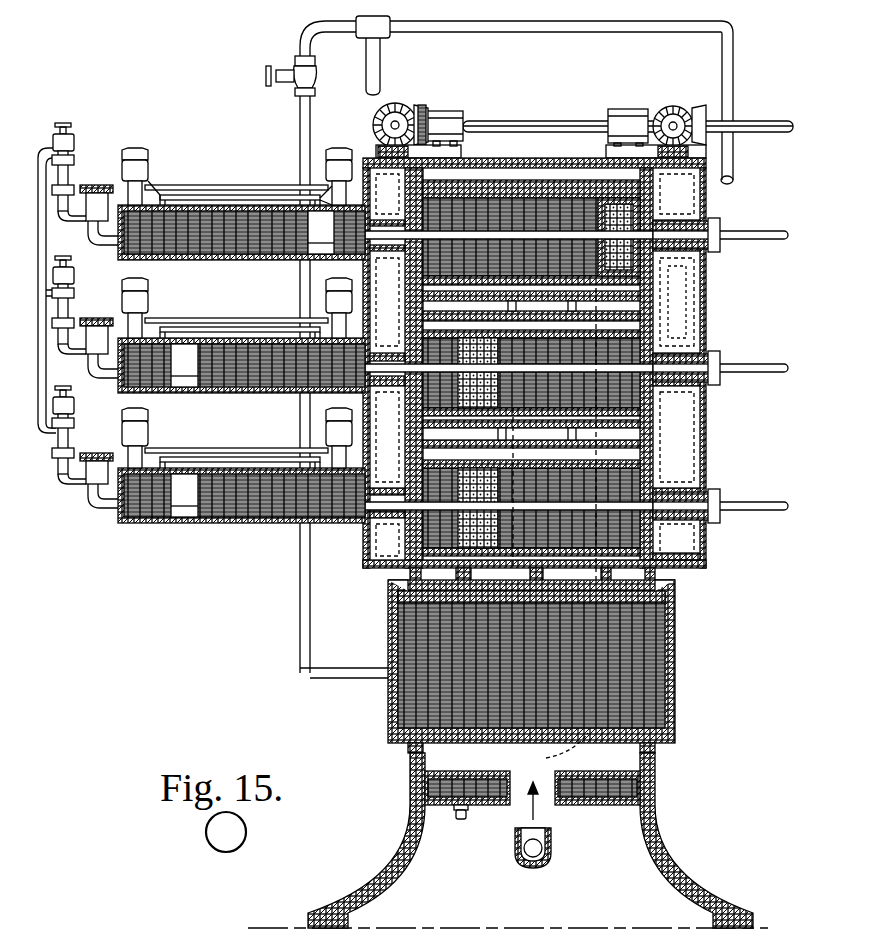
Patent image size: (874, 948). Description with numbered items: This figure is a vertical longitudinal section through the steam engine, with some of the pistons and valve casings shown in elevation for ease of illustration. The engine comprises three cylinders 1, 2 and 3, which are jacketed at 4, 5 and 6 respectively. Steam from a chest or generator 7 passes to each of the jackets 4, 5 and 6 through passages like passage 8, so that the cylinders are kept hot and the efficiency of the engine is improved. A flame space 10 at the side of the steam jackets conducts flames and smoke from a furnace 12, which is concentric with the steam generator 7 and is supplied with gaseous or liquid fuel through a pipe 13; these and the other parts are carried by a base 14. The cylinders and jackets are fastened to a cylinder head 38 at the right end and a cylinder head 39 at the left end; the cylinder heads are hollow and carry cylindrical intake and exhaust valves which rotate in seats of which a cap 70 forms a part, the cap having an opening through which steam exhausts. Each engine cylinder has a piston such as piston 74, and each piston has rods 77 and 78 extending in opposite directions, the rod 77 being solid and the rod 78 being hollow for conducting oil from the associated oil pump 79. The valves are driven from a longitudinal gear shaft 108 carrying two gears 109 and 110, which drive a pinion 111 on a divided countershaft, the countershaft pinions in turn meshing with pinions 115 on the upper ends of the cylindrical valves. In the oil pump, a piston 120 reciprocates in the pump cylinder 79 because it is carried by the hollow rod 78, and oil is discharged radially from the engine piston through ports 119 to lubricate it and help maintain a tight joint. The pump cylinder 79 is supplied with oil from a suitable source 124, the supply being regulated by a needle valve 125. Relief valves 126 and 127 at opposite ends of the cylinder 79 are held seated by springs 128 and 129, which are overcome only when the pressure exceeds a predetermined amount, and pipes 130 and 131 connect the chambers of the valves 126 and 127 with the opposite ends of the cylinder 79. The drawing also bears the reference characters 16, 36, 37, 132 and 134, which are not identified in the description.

The cylinder 1 is at (478, 175).
The cylinder 2 is at (640, 404).
The cylinder 3 is at (672, 528).
The steam jacket 4 is at (512, 175).
The steam jacket 5 is at (640, 418).
The steam jacket 6 is at (672, 549).
The steam chest or generator 7 is at (668, 660).
The passage 8 is at (565, 283).
The flame space 10 is at (445, 277).
The furnace 12 is at (455, 770).
The pipe 13 is at (518, 852).
The base 14 is at (632, 768).
The drain fitting 16 is at (452, 810).
The valve 36 is at (258, 68).
The supply pipe 37 is at (292, 27).
The cylinder head 38 is at (690, 430).
The cylinder head 39 is at (362, 530).
The cap 70 is at (672, 196).
The piston 74 is at (660, 255).
The rod 77 is at (766, 221).
The rod 78 is at (445, 235).
The oil pump cylinder 79 is at (200, 252).
The gear shaft 108 is at (565, 113).
The gear 109 is at (692, 100).
The gear 110 is at (416, 100).
The pinion 111 is at (392, 95).
The pinion 115 is at (372, 145).
The port 119 is at (672, 290).
The piston 120 is at (310, 226).
The source 124 is at (36, 138).
The needle valve 125 is at (63, 118).
The relief valve 126 is at (148, 182).
The relief valve 127 is at (318, 192).
The spring 128 is at (66, 152).
The spring 129 is at (322, 160).
The pipe 130 is at (200, 177).
The pipe 131 is at (235, 188).
The inlet pipe 132 is at (82, 232).
The valve 134 is at (135, 150).